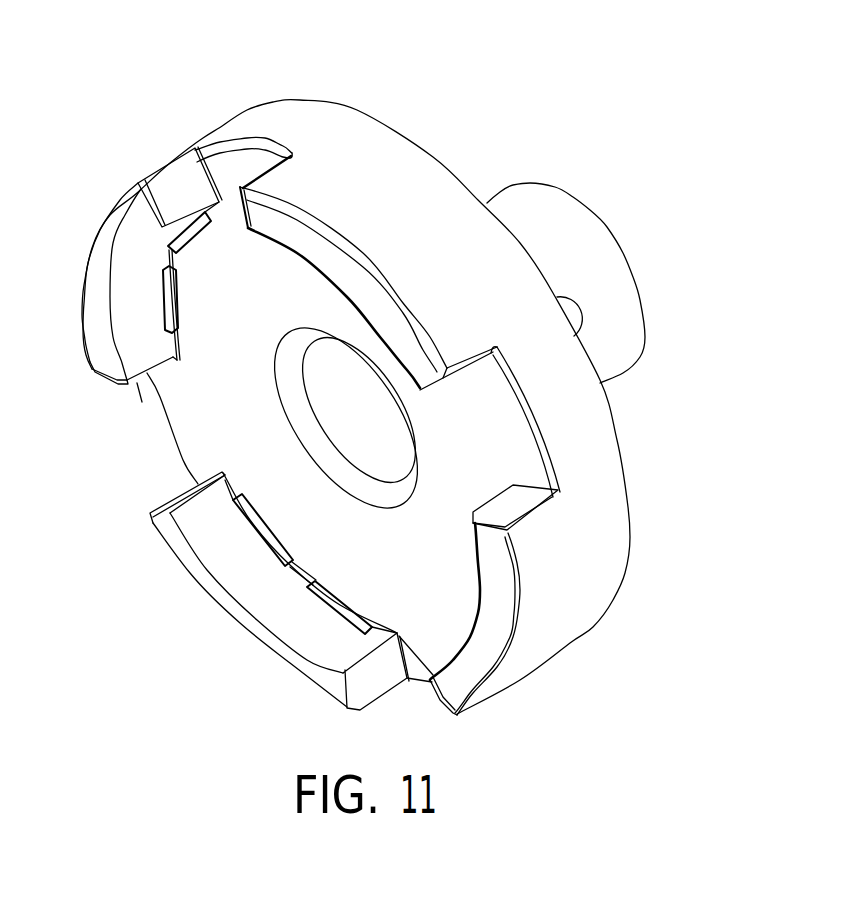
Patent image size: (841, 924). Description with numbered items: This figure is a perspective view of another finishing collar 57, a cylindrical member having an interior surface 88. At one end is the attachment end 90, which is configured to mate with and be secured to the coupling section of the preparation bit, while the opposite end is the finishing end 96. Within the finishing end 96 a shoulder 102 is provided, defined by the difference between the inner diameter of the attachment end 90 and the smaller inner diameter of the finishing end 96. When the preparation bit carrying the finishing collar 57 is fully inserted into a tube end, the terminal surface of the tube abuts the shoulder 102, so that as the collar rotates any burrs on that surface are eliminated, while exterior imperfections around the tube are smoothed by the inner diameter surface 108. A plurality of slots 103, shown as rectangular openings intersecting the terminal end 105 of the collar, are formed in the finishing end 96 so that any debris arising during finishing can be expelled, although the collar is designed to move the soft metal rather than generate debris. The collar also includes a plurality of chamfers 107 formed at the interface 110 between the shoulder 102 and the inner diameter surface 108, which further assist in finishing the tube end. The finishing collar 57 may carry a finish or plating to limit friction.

The finishing collar 57 is at (110, 101).
The finishing end 96 is at (223, 127).
The slots 103 is at (177, 192).
The inner diameter surface 108 is at (142, 277).
The chamfers 107 is at (188, 237).
The interface 110 is at (178, 347).
The interior surface 88 is at (343, 413).
The attachment end 90 is at (633, 277).
The shoulder 102 is at (438, 616).
The terminal end 105 is at (282, 655).